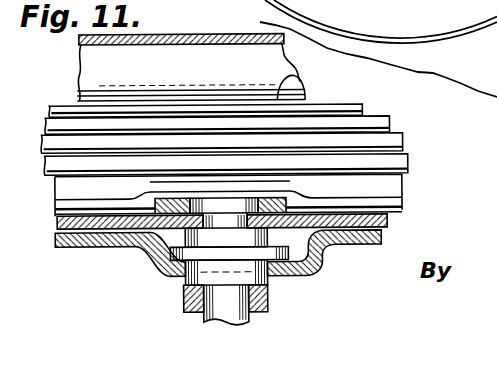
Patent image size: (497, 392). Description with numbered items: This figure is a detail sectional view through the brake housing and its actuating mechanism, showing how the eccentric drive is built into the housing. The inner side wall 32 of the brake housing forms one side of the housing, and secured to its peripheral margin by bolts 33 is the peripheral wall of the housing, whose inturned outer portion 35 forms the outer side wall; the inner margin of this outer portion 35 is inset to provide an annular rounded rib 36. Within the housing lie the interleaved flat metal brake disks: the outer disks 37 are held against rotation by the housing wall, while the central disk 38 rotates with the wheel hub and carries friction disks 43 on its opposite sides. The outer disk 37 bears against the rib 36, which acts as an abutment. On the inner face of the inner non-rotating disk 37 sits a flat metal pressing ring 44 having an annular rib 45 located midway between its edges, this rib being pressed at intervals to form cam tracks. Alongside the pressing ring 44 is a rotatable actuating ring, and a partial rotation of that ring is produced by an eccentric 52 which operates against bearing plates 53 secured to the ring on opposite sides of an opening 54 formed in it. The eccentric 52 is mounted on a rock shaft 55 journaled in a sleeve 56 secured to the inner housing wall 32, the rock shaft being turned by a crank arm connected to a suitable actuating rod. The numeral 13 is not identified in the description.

The valve body 13 is at (410, 147).
The inner side wall of brake housing 32 is at (157, 281).
The bolts 33 is at (405, 0).
The inturned outer portion 35 is at (80, 42).
The annular rounded rib 36 is at (302, 80).
The outer disks 37 is at (360, 108).
The central disk 38 is at (405, 138).
The friction disks 43 is at (384, 124).
The pressing ring 44 is at (402, 176).
The annular rib 45 is at (403, 202).
The eccentric 52 is at (250, 197).
The bearing plates 53 is at (292, 198).
The opening 54 is at (136, 197).
The rock shaft 55 is at (268, 300).
The sleeve 56 is at (182, 300).